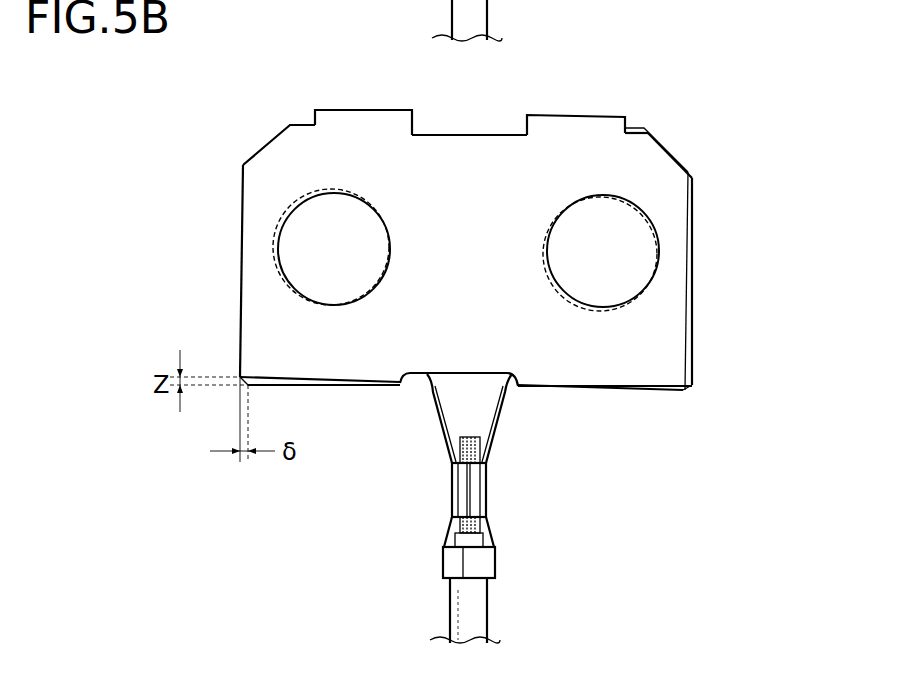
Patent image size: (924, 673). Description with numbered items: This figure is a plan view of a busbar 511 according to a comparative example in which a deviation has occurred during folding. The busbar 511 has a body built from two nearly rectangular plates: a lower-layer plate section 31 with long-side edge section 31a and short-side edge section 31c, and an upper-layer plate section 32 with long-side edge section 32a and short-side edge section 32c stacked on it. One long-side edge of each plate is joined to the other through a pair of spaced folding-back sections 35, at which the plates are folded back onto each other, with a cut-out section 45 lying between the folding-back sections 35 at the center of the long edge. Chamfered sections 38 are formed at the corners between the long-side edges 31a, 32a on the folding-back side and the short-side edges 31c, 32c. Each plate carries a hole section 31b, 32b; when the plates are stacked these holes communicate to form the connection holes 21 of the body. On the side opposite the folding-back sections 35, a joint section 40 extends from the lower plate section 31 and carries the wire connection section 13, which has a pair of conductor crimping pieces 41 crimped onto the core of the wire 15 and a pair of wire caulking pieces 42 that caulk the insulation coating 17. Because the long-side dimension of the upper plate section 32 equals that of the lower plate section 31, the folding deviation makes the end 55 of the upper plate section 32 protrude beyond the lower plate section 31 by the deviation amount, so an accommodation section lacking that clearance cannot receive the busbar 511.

The busbar 511 is at (240, 61).
The wire connection section 13 is at (506, 516).
The wire 15 is at (497, 5).
The insulation coating 17 is at (450, 2).
The connection holes 21 is at (318, 240).
The plate section 31 is at (583, 357).
The long-side edge section 31a is at (648, 130).
The hole section 31b is at (372, 250).
The short-side edge section 31c is at (693, 340).
The plate section 32 is at (673, 295).
The long-side edge section 32a is at (645, 133).
The hole section 32b is at (345, 297).
The short-side edge section 32c is at (243, 252).
The folding-back sections 35 is at (337, 110).
The chamfered sections 38 is at (273, 138).
The joint section 40 is at (488, 412).
The conductor crimping pieces 41 is at (482, 490).
The wire caulking pieces 42 is at (443, 552).
The cut-out section 45 is at (455, 135).
The end 55 is at (237, 380).